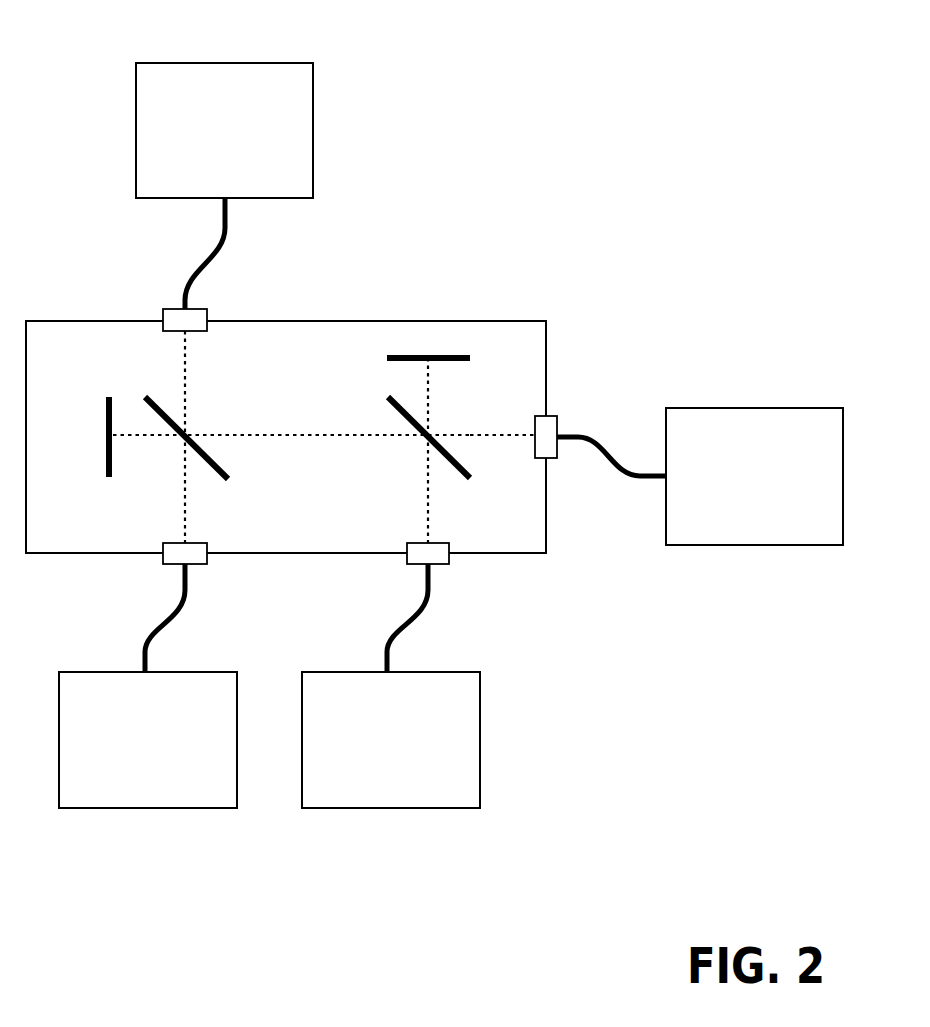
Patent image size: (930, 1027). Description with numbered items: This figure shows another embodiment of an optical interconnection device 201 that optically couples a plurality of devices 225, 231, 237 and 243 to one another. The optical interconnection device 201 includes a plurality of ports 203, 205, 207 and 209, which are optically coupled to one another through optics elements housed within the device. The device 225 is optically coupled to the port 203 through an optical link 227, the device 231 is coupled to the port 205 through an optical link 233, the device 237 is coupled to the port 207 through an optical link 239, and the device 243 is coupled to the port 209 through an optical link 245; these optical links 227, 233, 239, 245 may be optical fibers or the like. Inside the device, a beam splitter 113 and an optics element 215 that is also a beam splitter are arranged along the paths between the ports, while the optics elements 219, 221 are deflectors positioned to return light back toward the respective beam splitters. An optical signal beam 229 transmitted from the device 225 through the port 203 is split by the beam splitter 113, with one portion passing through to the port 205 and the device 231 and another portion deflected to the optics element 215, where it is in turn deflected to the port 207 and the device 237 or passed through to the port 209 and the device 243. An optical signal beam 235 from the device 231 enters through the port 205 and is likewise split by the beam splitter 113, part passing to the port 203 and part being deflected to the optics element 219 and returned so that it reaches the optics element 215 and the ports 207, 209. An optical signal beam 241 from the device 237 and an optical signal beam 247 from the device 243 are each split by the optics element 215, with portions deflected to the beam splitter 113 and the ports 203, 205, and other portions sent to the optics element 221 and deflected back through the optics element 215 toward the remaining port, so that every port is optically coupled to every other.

The optical interconnection device 201 is at (536, 321).
The port 203 is at (167, 307).
The port 205 is at (165, 570).
The port 207 is at (410, 568).
The port 209 is at (552, 412).
The device 225 is at (307, 62).
The device 231 is at (233, 810).
The device 237 is at (477, 810).
The device 243 is at (837, 405).
The optical link 227 is at (230, 235).
The optical link 233 is at (162, 630).
The optical link 239 is at (403, 630).
The optical link 245 is at (625, 475).
The optics element 219 is at (107, 479).
The optics element 221 is at (386, 358).
The beam splitter 113 is at (228, 479).
The optics element 215 is at (470, 478).
The optical signal beam 229 is at (183, 350).
The optical signal beam 235 is at (183, 508).
The optical signal beam 241 is at (427, 517).
The optical signal beam 247 is at (473, 435).